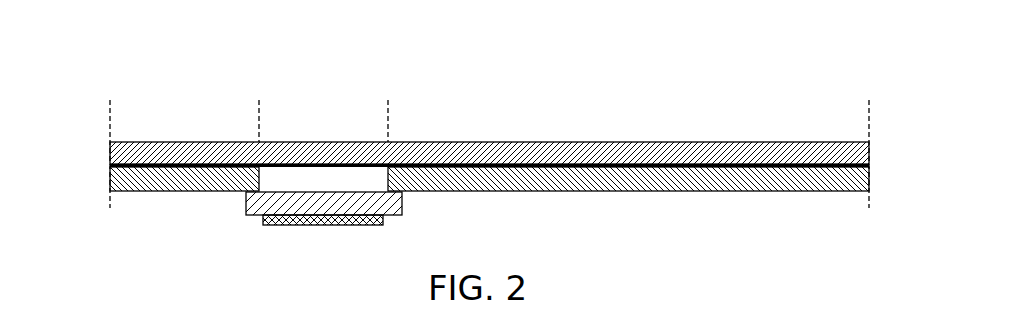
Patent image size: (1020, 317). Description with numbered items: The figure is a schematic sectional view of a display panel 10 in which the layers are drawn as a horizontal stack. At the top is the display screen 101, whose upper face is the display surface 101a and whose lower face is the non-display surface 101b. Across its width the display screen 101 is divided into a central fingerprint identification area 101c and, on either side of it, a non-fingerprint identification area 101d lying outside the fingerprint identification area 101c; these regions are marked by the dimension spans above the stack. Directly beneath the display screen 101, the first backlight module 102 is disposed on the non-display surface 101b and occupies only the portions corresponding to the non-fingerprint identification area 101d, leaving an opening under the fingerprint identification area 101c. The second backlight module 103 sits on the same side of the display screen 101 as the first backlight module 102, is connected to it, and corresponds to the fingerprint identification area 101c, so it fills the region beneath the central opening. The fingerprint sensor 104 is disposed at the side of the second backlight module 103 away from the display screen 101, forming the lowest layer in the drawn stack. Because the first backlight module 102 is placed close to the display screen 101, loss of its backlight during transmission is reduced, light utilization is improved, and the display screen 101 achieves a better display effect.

The display panel 10 is at (128, 88).
The display screen 101 is at (110, 147).
The display surface 101a is at (869, 142).
The non-display surface 101b is at (869, 163).
The fingerprint identification area 101c is at (388, 126).
The non-fingerprint identification area 101d is at (259, 126).
The first backlight module 102 is at (869, 185).
The second backlight module 103 is at (246, 206).
The fingerprint sensor 104 is at (263, 222).